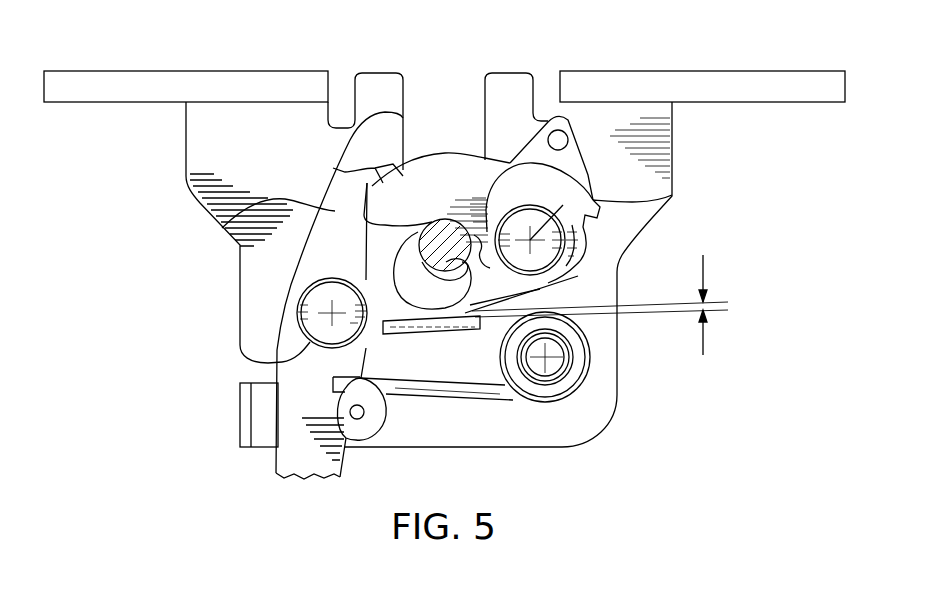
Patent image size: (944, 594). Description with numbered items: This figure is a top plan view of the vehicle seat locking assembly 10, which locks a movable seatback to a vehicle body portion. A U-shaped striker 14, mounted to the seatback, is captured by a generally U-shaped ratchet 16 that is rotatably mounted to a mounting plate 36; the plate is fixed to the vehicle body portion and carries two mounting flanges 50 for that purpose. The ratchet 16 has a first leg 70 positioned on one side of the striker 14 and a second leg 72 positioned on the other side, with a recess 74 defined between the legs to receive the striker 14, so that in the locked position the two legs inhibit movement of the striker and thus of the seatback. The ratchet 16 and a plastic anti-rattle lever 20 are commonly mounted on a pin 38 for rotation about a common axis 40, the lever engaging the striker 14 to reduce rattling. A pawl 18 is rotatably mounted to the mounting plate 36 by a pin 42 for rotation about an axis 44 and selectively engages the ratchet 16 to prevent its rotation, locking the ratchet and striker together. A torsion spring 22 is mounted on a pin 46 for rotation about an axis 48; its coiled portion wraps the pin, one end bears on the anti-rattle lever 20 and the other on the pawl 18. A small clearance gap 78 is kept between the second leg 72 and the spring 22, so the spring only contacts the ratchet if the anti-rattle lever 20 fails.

The locking assembly 10 is at (191, 264).
The striker 14 is at (422, 244).
The ratchet 16 is at (440, 175).
The pawl 18 is at (226, 228).
The anti-rattle lever 20 is at (552, 283).
The spring 22 is at (580, 368).
The mounting plate 36 is at (507, 433).
The pin 38 is at (622, 247).
The common axis 40 is at (672, 196).
The pin 42 is at (322, 332).
The axis 44 is at (325, 310).
The pin 46 is at (553, 371).
The axis 48 is at (564, 347).
The mounting flanges 50 is at (185, 88).
The first leg 70 is at (335, 168).
The second leg 72 is at (413, 322).
The recess 74 is at (478, 260).
The clearance gap 78 is at (714, 296).